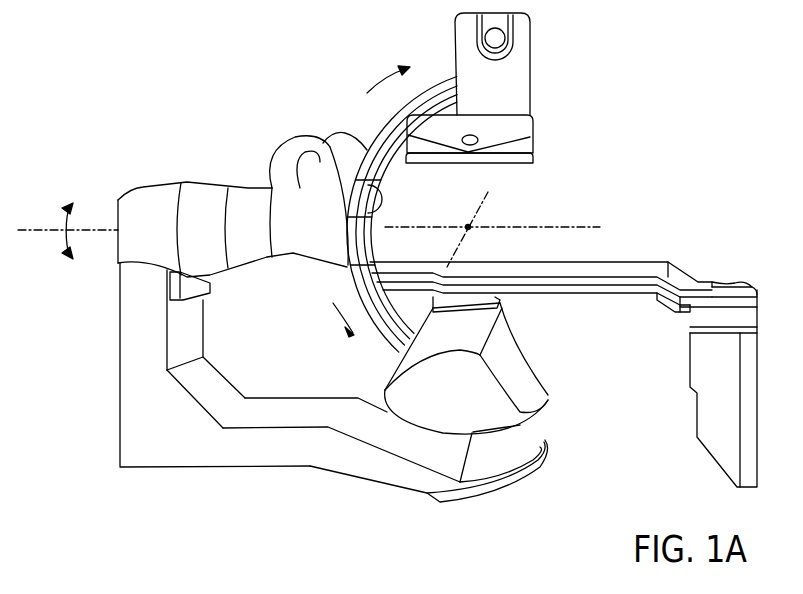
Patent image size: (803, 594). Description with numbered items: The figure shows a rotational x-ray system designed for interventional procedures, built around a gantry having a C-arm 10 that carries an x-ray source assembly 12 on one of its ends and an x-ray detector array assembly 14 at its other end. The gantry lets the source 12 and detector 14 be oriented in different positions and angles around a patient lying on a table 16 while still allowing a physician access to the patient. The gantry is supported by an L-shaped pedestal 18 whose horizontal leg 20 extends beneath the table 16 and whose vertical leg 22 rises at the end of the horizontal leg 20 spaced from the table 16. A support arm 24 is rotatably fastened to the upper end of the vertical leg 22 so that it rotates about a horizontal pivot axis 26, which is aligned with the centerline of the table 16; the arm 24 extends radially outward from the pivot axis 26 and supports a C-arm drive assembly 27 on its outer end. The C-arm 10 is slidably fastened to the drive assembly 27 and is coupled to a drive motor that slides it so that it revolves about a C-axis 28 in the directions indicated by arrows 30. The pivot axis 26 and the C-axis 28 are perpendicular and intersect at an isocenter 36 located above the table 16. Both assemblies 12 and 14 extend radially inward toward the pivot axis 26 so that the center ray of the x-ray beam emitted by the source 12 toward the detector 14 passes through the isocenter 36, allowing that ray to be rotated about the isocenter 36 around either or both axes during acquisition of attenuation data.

The C-arm 10 is at (360, 110).
The x-ray source assembly 12 is at (513, 340).
The x-ray detector array assembly 14 is at (540, 148).
The table 16 is at (578, 259).
The L-shaped pedestal 18 is at (240, 376).
The horizontal leg 20 is at (332, 397).
The vertical leg 22 is at (120, 375).
The support arm 24 is at (250, 188).
The horizontal pivot axis 26 is at (97, 230).
The C-arm drive assembly 27 is at (337, 153).
The C-axis 28 is at (489, 196).
The arrows 30 is at (383, 83).
The isocenter 36 is at (474, 231).